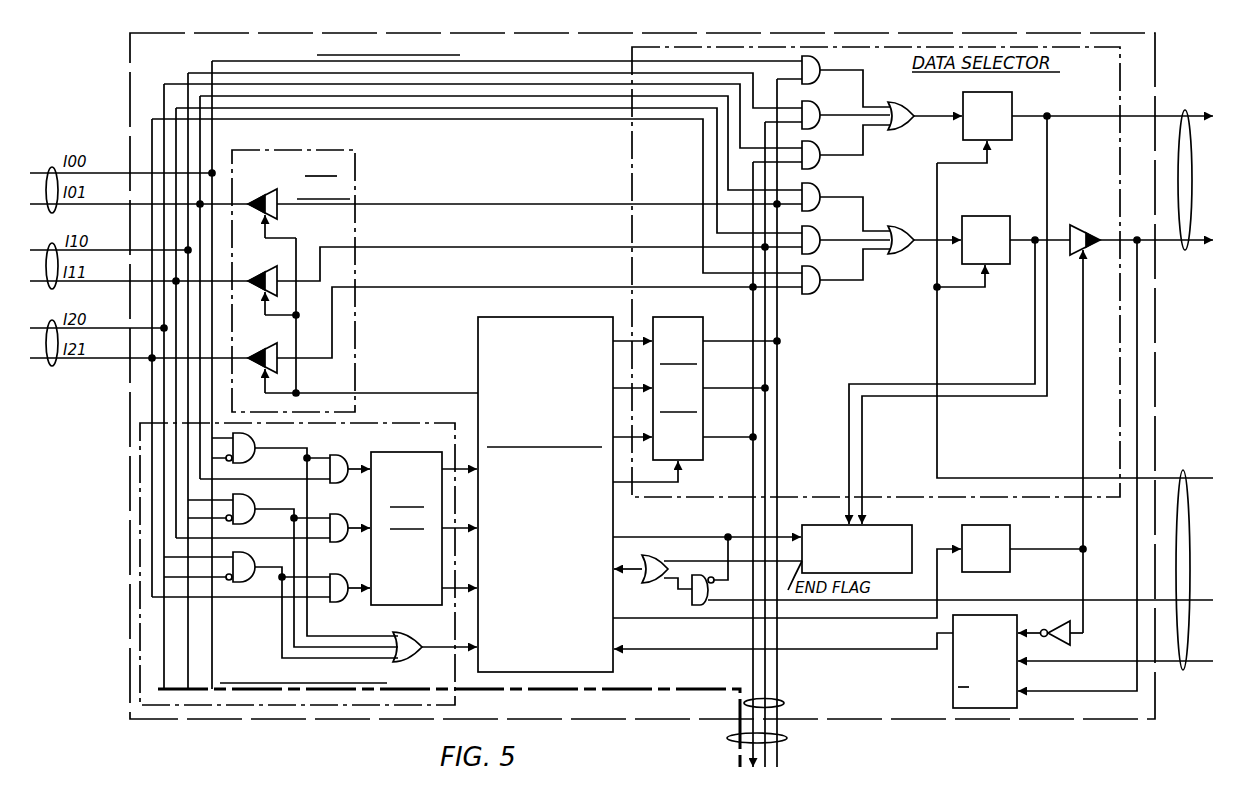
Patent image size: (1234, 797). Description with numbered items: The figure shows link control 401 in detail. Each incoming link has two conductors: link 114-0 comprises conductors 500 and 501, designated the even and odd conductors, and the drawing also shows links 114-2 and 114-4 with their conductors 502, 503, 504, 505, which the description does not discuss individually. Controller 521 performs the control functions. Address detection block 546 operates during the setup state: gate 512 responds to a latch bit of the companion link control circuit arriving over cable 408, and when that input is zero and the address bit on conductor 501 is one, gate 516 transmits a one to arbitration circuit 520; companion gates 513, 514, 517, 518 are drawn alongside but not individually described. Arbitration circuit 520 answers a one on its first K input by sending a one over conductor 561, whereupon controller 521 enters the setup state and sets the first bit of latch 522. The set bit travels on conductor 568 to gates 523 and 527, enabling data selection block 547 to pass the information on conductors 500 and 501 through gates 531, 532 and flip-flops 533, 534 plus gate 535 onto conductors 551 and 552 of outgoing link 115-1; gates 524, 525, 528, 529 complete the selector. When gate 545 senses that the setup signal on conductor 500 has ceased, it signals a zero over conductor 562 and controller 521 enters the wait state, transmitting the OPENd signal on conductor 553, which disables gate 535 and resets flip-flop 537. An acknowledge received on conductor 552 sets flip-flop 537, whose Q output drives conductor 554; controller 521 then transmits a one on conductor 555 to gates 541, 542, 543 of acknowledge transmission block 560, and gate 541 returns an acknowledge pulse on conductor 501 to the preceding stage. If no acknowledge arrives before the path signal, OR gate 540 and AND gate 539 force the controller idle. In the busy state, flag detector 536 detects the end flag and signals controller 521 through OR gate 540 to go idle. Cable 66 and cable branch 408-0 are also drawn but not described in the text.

The link control 401 is at (1098, 33).
The conductor 500 is at (386, 61).
The conductor 501 is at (481, 96).
The input line I10 502 is at (379, 73).
The input line I11 503 is at (472, 108).
The input line I20 504 is at (372, 84).
The input line I21 505 is at (464, 119).
The gate 512 is at (256, 456).
The NAND gate 513 is at (256, 517).
The NAND gate 514 is at (256, 576).
The gate 516 is at (338, 483).
The AND gate 517 is at (338, 542).
The AND gate 518 is at (338, 602).
The arbitration circuit 520 is at (398, 452).
The controller 521 is at (560, 317).
The latch 522 is at (655, 317).
The gate 523 is at (819, 80).
The AND gate 524 is at (819, 125).
The AND gate 525 is at (819, 165).
The gate 527 is at (819, 207).
The AND gate 528 is at (819, 250).
The AND gate 529 is at (819, 290).
The gate 531 is at (906, 128).
The gate 532 is at (914, 262).
The flip-flop 533 is at (970, 92).
The flip-flop 534 is at (970, 216).
The gate 535 is at (1090, 207).
The flag detector 536 is at (880, 525).
The flip-flop 537 is at (952, 663).
The AND gate 539 is at (697, 605).
The OR gate 540 is at (660, 560).
The gate 541 is at (280, 190).
The gate 542 is at (280, 268).
The gate 543 is at (280, 345).
The gate 545 is at (412, 661).
The address detection block 546 is at (373, 423).
The data selection block 547 is at (632, 165).
The conductor 551 is at (1108, 116).
The conductor 552 is at (1108, 239).
The conductor 553 is at (1050, 550).
The conductor 554 is at (832, 649).
The conductor 555 is at (418, 392).
The acknowledge transmission block 560 is at (308, 150).
The conductor 561 is at (466, 466).
The conductor 562 is at (444, 646).
The conductor 568 is at (400, 206).
The cable branch 408-0 is at (784, 703).
The cable 408 is at (787, 738).
The cable 66 is at (1183, 670).
The link 114-0 is at (47, 169).
The link 114-2 is at (47, 246).
The link 114-4 is at (47, 323).
The link 115-1 is at (1186, 110).